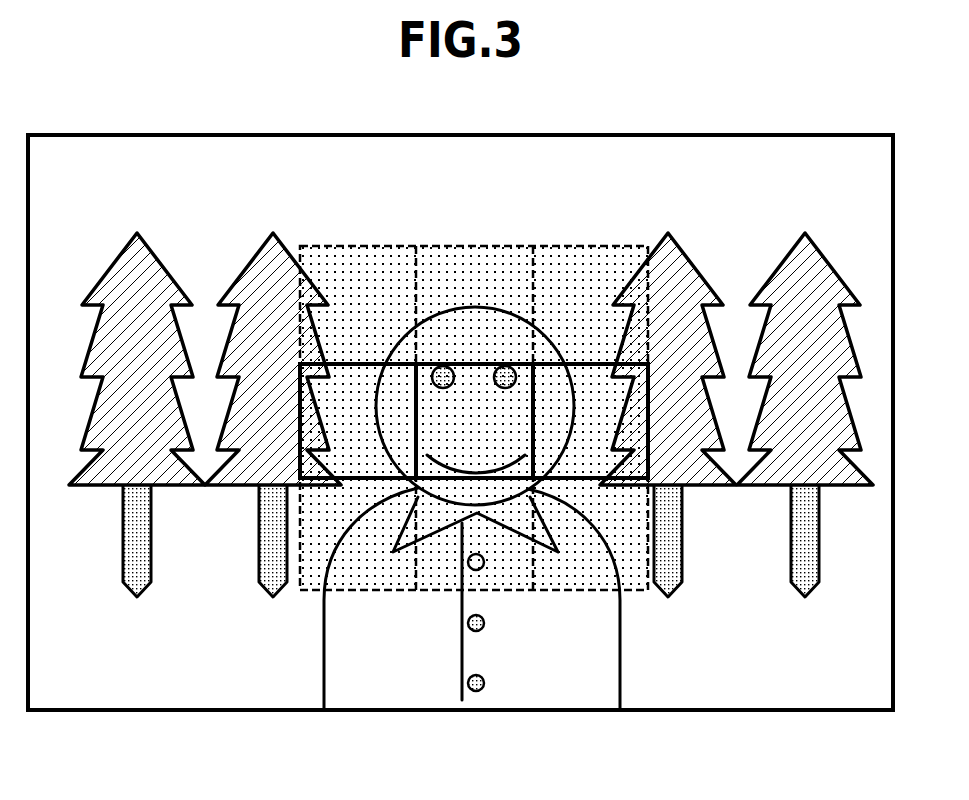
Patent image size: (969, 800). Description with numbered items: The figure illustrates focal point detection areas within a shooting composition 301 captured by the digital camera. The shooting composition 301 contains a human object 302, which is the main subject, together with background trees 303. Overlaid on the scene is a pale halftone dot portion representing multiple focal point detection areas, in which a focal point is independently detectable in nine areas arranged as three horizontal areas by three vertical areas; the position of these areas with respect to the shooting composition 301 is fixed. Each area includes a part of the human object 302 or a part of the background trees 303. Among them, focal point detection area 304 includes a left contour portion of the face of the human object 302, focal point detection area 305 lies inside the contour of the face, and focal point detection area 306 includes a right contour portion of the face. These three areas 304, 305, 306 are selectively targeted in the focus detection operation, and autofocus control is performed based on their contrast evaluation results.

The shooting composition 301 is at (735, 134).
The human object 302 is at (456, 305).
The background trees 303 is at (253, 262).
The focal point detection area 304 is at (362, 363).
The focal point detection area 305 is at (487, 363).
The focal point detection area 306 is at (588, 363).